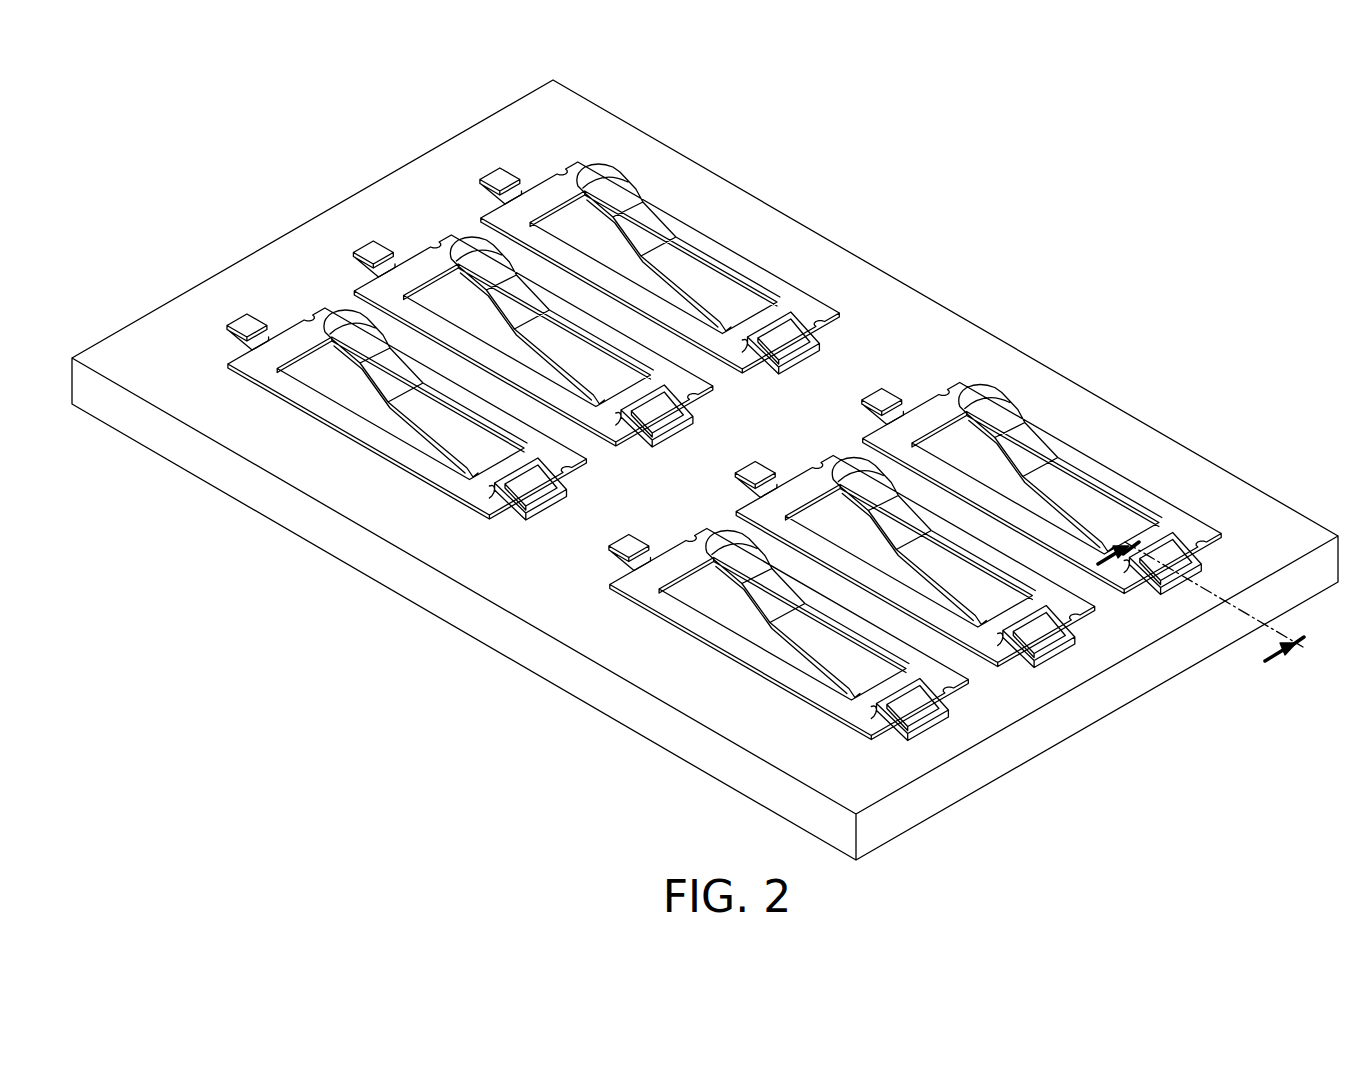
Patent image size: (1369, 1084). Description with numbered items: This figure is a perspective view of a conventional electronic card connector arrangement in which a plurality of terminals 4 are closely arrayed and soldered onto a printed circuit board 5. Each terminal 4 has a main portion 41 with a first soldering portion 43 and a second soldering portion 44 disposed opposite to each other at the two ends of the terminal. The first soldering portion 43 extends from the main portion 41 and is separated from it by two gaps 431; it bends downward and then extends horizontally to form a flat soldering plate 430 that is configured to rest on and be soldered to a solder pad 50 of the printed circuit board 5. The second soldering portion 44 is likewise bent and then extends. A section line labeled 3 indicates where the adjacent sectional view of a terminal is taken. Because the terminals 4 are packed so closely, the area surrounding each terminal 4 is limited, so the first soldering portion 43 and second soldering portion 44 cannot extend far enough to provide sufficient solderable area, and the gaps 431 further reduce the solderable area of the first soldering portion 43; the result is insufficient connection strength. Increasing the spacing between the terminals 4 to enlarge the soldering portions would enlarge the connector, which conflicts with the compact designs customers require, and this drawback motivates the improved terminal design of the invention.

The terminals 3 is at (1189, 613).
The terminal 4 is at (687, 509).
The printed circuit board 5 is at (1170, 433).
The main portion 41 is at (975, 638).
The first soldering portion 43 is at (847, 768).
The second soldering portion 44 is at (245, 320).
The solder pad 50 is at (606, 551).
The flat soldering plate 430 is at (930, 725).
The gaps 431 is at (1057, 622).